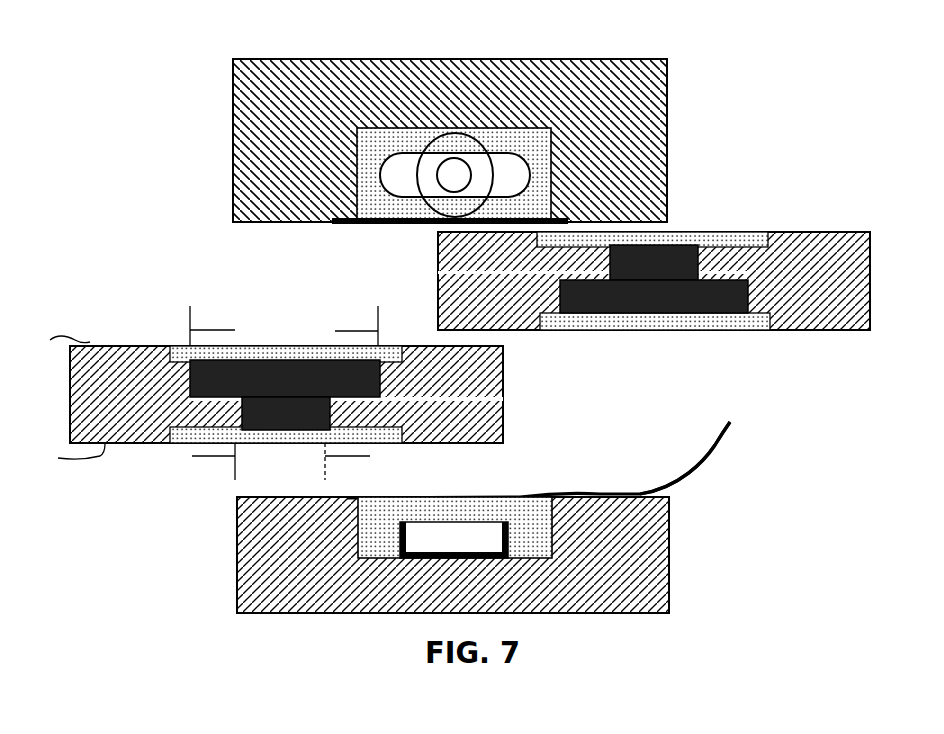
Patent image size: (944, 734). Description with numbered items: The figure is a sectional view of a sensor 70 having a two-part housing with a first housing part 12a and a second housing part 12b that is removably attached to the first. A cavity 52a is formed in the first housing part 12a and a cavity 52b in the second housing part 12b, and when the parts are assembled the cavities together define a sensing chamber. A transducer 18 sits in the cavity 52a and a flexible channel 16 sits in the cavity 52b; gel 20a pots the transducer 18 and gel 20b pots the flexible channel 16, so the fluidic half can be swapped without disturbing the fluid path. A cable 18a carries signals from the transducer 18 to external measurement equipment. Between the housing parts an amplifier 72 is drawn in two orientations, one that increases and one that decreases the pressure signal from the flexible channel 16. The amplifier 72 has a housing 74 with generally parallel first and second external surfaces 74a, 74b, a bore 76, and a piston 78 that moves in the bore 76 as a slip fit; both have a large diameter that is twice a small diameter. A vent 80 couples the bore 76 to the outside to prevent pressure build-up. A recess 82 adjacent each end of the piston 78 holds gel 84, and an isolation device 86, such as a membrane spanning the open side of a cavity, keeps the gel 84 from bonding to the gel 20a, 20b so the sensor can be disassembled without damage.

The sensor 70 is at (156, 146).
The amplifier 72 is at (104, 321).
The housing 74 is at (259, 417).
The first external surface 74a is at (259, 367).
The second external surface 74b is at (151, 445).
The bore 76 is at (340, 412).
The piston 78 is at (265, 347).
The vent 80 is at (381, 425).
The recess 82 is at (522, 393).
The gel 84 is at (182, 346).
The isolation device 86 is at (398, 222).
The first housing part 12a is at (471, 552).
The second housing part 12b is at (494, 148).
The flexible channel 16 is at (403, 152).
The transducer 18 is at (490, 545).
The cable 18a is at (722, 458).
The gel 20a is at (385, 547).
The gel 20b is at (507, 142).
The cavity 52a is at (357, 530).
The cavity 52b is at (357, 183).